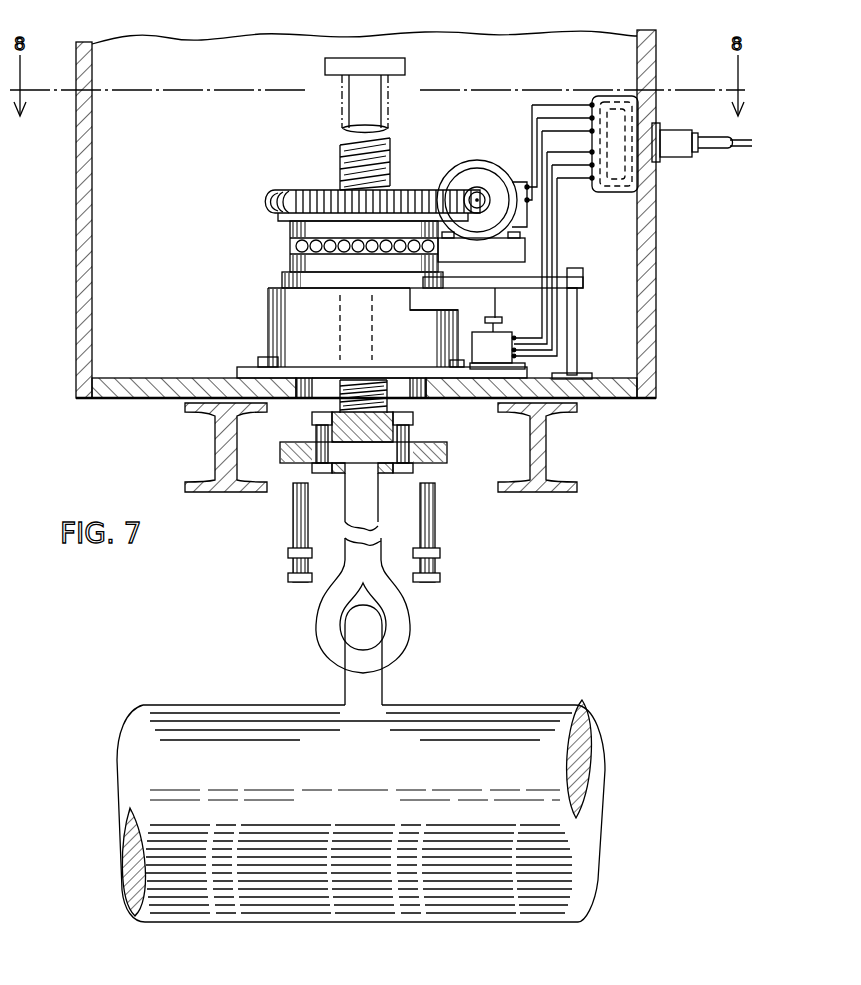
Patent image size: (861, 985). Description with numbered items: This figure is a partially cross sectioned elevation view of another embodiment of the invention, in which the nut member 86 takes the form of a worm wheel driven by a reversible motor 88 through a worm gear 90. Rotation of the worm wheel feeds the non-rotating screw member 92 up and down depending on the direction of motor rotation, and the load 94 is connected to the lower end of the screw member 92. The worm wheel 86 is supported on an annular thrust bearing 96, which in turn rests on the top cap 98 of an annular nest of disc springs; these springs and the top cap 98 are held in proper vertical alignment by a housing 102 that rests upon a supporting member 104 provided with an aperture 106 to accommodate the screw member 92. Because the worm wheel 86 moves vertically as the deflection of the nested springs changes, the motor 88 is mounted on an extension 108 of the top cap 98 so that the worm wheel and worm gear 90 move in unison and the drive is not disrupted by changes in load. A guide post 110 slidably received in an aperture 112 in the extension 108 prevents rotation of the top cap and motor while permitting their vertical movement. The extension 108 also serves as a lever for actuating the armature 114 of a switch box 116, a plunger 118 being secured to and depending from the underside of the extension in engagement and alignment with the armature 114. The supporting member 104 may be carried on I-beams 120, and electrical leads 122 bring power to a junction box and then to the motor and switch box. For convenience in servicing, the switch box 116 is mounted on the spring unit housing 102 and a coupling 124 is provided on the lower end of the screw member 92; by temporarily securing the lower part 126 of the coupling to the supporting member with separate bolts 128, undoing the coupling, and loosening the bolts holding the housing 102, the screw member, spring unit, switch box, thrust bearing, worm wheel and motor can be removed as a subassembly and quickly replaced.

The nut member 86 is at (292, 192).
The motor 88 is at (479, 172).
The worm gear 90 is at (468, 192).
The screw member 92 is at (340, 175).
The load 94 is at (472, 706).
The annular thrust bearing 96 is at (292, 233).
The top cap 98 is at (284, 279).
The housing 102 is at (296, 325).
The supporting member 104 is at (148, 388).
The aperture 106 is at (405, 396).
The extension 108 is at (553, 282).
The guide post 110 is at (577, 318).
The aperture 112 is at (584, 283).
The armature 114 is at (503, 330).
The switch box 116 is at (505, 352).
The plunger 118 is at (495, 306).
The I-beams 120 is at (546, 450).
The electrical leads 122 is at (640, 186).
The coupling 124 is at (292, 427).
The lower part of the coupling 126 is at (290, 448).
The bolts 128 is at (293, 502).